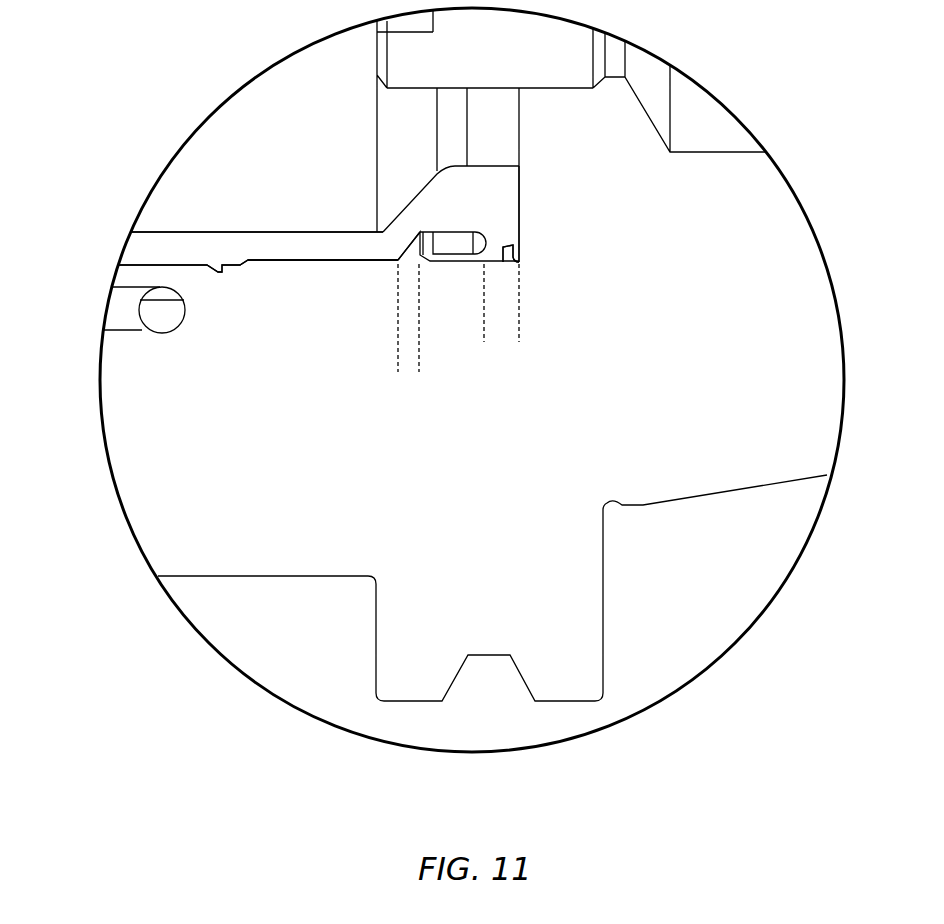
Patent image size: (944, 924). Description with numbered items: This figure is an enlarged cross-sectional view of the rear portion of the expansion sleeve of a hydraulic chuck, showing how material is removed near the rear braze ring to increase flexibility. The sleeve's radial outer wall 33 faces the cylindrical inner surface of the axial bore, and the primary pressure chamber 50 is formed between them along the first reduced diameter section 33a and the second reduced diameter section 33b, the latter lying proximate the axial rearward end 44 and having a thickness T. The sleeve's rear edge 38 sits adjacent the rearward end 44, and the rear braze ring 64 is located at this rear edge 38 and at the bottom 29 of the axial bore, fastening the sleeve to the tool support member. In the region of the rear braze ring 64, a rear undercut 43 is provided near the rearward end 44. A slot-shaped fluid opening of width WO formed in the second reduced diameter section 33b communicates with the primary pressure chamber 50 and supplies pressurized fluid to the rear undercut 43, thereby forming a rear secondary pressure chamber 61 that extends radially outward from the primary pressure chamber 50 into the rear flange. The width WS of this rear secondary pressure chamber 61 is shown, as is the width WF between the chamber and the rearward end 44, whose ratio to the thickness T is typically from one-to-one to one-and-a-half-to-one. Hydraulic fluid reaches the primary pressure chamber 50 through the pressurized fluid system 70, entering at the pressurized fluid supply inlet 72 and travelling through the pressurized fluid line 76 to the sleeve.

The bottom of the axial bore 29 is at (517, 188).
The radial outer wall 33 is at (226, 232).
The first reduced diameter section 33a is at (168, 270).
The second reduced diameter section 33b is at (272, 270).
The rear edge 38 is at (520, 205).
The rear undercut 43 is at (421, 229).
The axial rearward end 44 is at (521, 218).
The primary pressure chamber 50 is at (200, 267).
The rear secondary pressure chamber 61 is at (455, 238).
The rear braze ring 64 is at (520, 256).
The pressurized fluid system 70 is at (120, 333).
The pressurized fluid supply inlet 72 is at (162, 318).
The pressurized fluid line 76 is at (131, 305).
The thickness of the second reduced diameter section T is at (335, 305).
The width of the fluid opening WO is at (426, 355).
The width of the rear secondary pressure chamber WS is at (484, 297).
The width between the rear secondary pressure chamber and the axial rearward end WF is at (484, 333).